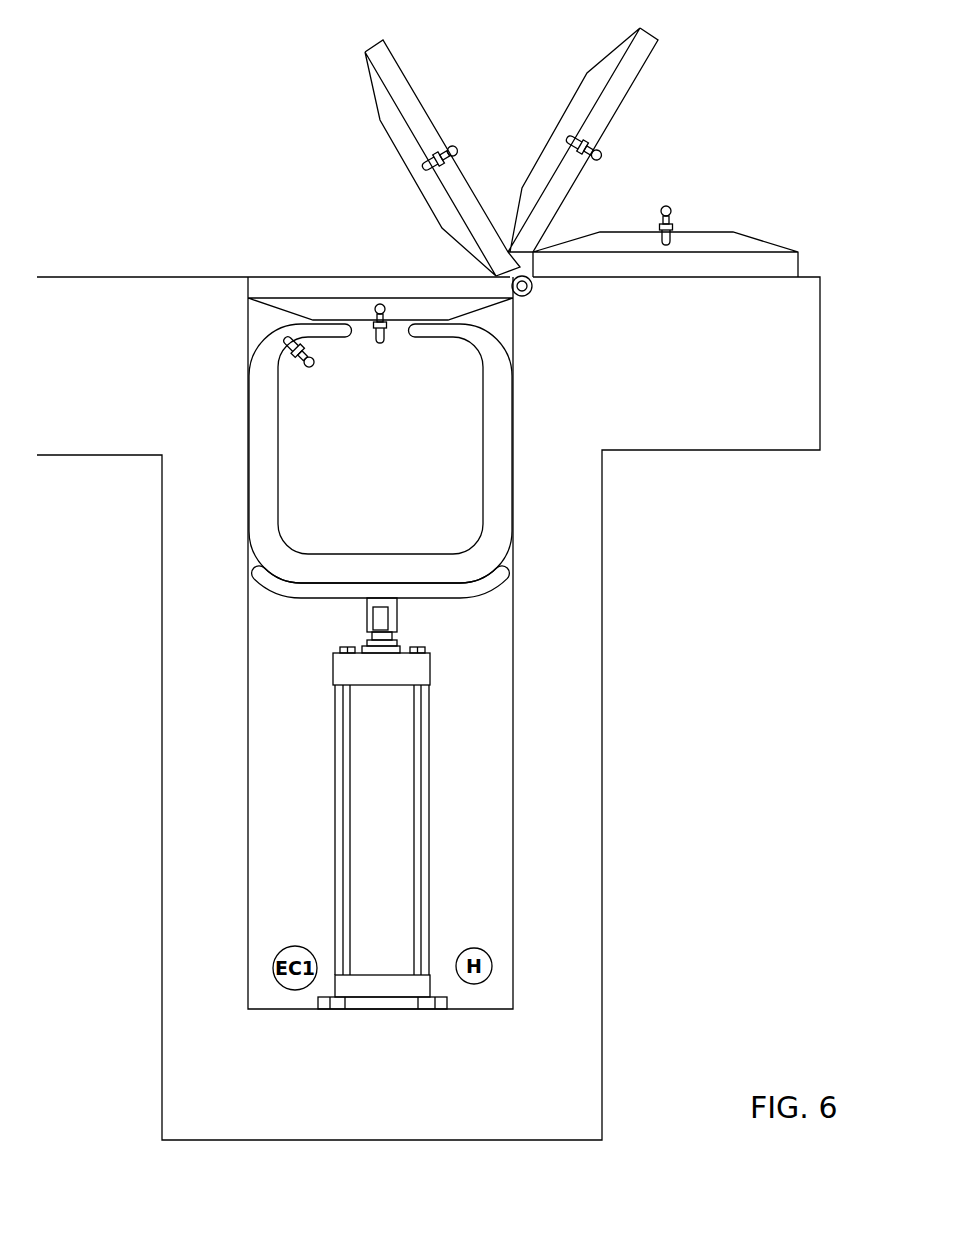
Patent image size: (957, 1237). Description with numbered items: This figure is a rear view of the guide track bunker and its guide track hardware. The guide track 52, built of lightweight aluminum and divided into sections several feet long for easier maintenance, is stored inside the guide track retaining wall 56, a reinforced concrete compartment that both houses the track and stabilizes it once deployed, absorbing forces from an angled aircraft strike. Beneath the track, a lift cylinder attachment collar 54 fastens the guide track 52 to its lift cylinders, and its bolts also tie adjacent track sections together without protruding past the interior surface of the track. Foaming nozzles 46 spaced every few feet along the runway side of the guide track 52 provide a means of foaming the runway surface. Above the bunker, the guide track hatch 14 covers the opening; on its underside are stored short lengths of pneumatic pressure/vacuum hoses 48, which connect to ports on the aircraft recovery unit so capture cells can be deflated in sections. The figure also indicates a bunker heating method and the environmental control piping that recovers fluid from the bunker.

The guide track hatch 14 is at (592, 148).
The foaming nozzles 46 is at (265, 310).
The pneumatic pressure/vacuum hoses 48 is at (671, 207).
The guide track 52 is at (500, 410).
The lift cylinder attachment collar 54 is at (480, 588).
The guide track retaining wall 56 is at (782, 362).